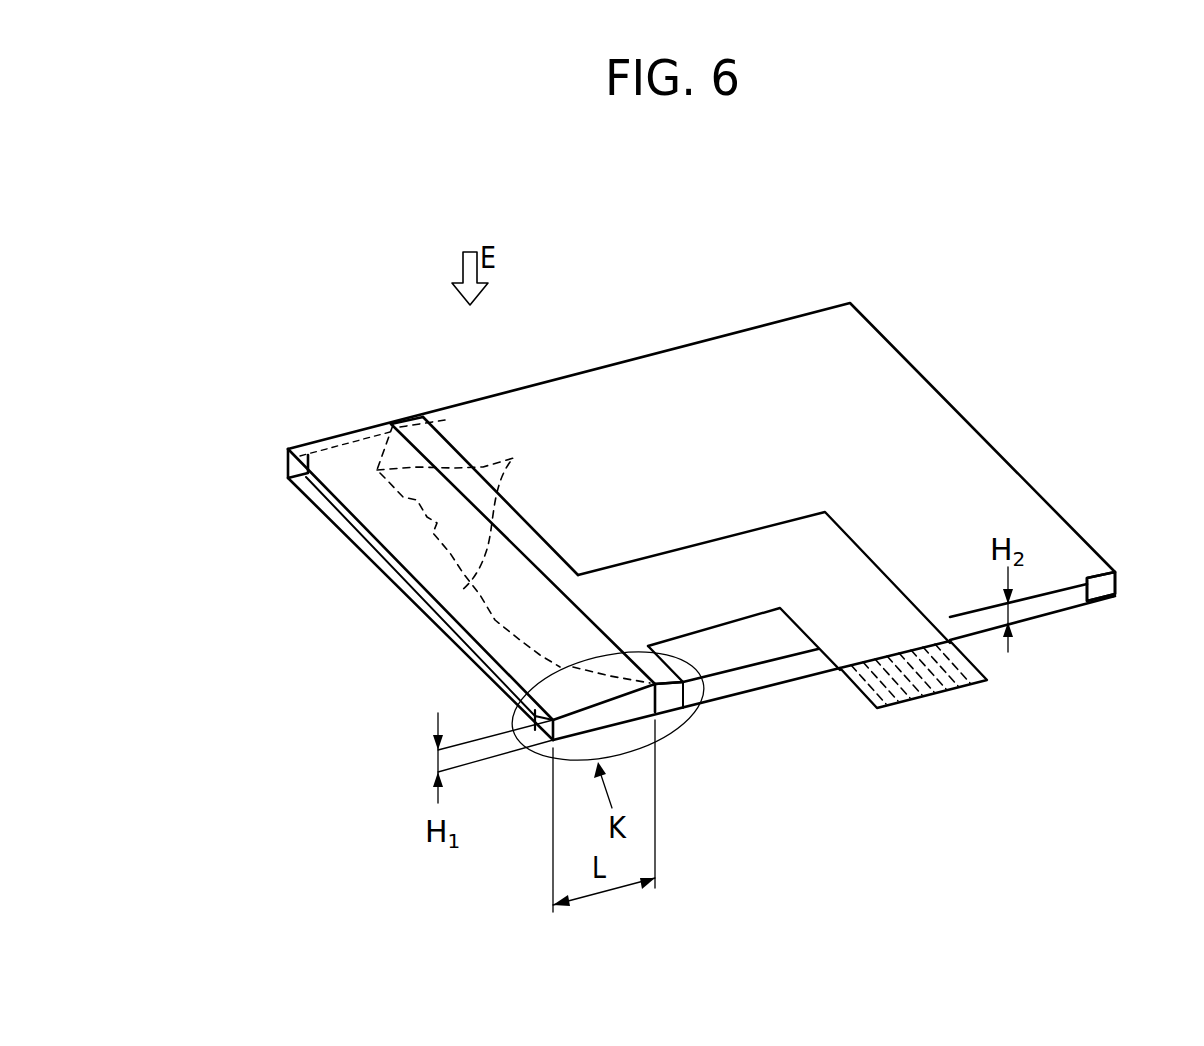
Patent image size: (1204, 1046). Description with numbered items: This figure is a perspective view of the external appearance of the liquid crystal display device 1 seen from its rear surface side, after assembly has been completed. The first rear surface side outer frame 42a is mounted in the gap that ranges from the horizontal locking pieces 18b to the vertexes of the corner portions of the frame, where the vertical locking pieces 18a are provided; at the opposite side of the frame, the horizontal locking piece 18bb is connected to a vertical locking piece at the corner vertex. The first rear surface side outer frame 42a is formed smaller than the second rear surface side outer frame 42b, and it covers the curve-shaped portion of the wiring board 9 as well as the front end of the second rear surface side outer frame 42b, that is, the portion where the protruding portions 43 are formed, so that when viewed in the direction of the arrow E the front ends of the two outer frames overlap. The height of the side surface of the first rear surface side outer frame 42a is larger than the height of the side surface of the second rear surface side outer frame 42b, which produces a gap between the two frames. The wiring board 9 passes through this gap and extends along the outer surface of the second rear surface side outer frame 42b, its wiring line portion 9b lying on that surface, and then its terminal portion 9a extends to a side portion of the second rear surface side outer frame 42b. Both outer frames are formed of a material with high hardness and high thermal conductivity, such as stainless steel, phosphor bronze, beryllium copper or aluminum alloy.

The liquid crystal display device 1 is at (661, 322).
The wiring board 9 is at (625, 609).
The terminal portion 9a is at (905, 674).
The wiring line portion 9b is at (738, 578).
The vertical locking piece 18a is at (288, 465).
The horizontal locking piece 18b is at (400, 420).
The horizontal locking piece 18bb is at (1100, 585).
The first rear surface side outer frame 42a is at (455, 593).
The second rear surface side outer frame 42b is at (848, 380).
The protruding portion 43 is at (513, 460).